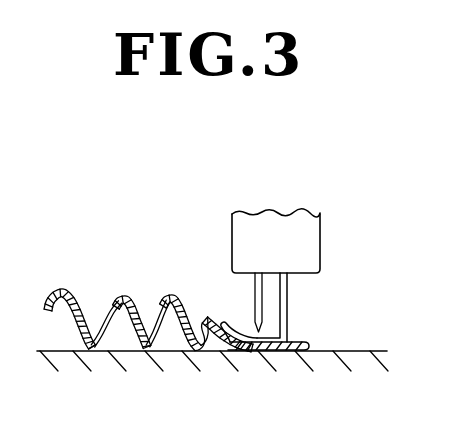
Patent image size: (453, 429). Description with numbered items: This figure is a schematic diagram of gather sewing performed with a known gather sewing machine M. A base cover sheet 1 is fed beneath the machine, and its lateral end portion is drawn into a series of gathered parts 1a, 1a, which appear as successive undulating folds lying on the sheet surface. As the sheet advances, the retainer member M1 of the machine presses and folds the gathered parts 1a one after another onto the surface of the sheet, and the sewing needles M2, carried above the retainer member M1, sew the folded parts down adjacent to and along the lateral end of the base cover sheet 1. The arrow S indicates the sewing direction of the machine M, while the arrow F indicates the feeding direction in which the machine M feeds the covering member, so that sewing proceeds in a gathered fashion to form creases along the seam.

The base cover sheet 1 is at (63, 283).
The gathered parts 1a is at (117, 297).
The gather sewing machine M is at (345, 248).
The retainer member M1 is at (290, 308).
The sewing needles M2 is at (259, 326).
The sewing direction S is at (215, 194).
The feeding direction F is at (163, 387).